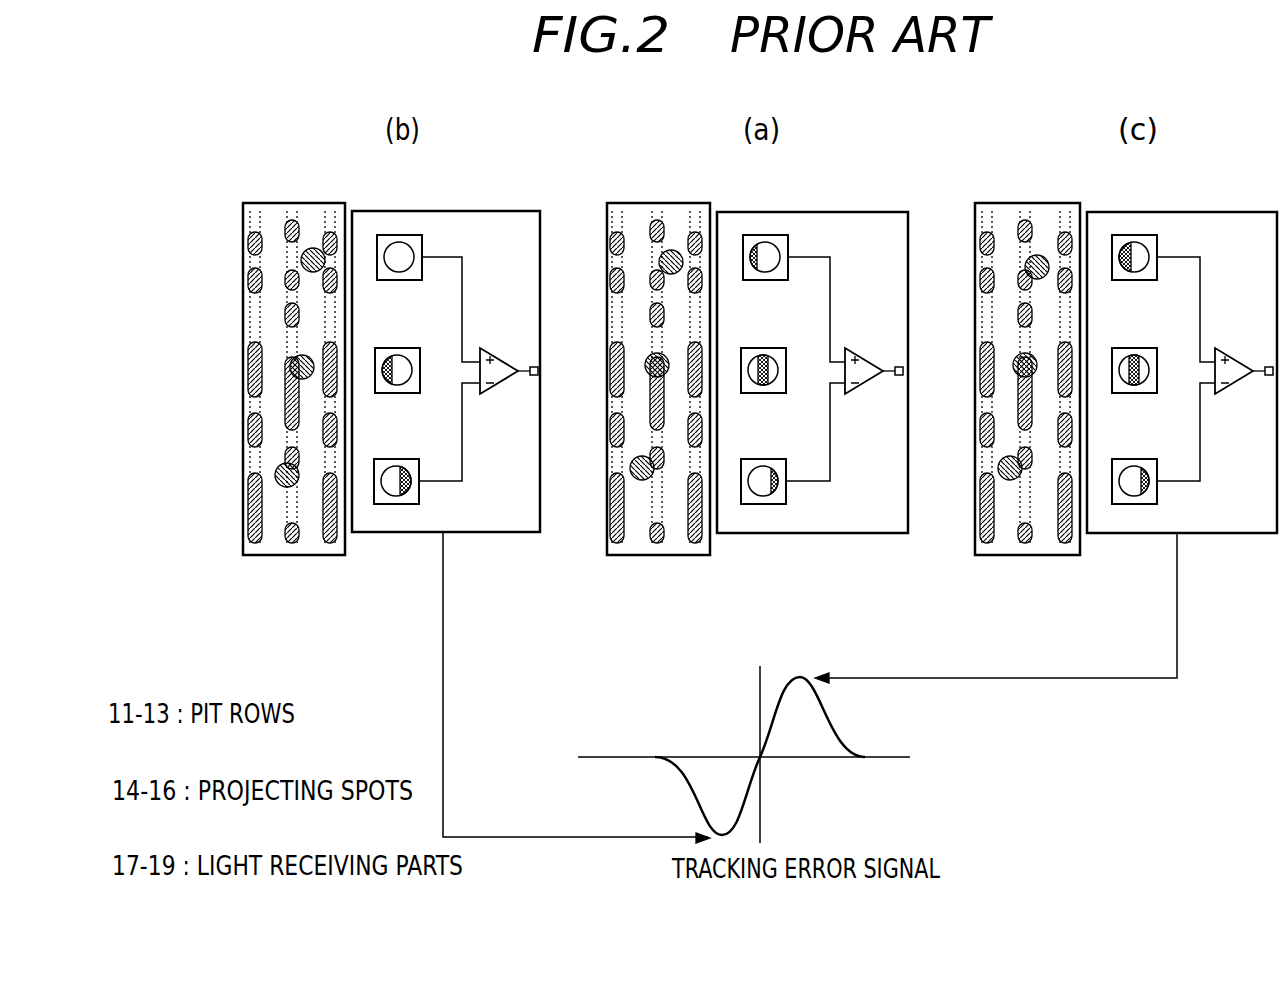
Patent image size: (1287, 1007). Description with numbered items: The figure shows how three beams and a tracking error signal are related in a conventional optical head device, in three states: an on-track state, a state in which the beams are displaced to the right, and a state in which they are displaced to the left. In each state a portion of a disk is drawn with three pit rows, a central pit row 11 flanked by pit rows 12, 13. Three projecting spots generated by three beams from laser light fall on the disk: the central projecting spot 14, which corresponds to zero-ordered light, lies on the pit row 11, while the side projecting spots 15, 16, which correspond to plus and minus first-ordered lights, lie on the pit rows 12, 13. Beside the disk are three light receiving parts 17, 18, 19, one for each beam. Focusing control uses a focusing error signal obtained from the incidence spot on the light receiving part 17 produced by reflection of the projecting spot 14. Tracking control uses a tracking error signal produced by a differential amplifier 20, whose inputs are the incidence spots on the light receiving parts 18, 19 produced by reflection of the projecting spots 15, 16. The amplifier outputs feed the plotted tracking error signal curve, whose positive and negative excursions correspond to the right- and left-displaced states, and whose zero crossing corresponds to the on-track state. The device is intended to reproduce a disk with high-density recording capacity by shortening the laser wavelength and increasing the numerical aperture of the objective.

The pit row 11 is at (293, 555).
The pit row 12 is at (243, 557).
The pit row 13 is at (342, 557).
The projecting spot 14 is at (293, 372).
The projecting spot 15 is at (277, 482).
The projecting spot 16 is at (302, 260).
The light receiving part 17 is at (388, 347).
The light receiving part 18 is at (385, 458).
The light receiving part 19 is at (390, 233).
The differential amplifier 20 is at (495, 392).